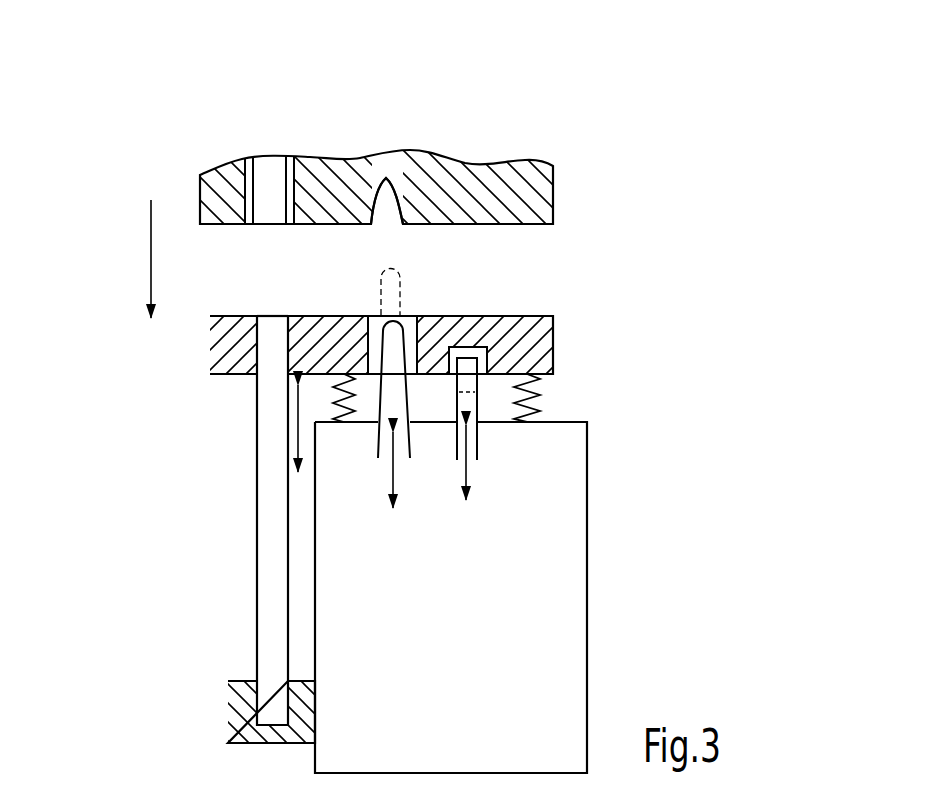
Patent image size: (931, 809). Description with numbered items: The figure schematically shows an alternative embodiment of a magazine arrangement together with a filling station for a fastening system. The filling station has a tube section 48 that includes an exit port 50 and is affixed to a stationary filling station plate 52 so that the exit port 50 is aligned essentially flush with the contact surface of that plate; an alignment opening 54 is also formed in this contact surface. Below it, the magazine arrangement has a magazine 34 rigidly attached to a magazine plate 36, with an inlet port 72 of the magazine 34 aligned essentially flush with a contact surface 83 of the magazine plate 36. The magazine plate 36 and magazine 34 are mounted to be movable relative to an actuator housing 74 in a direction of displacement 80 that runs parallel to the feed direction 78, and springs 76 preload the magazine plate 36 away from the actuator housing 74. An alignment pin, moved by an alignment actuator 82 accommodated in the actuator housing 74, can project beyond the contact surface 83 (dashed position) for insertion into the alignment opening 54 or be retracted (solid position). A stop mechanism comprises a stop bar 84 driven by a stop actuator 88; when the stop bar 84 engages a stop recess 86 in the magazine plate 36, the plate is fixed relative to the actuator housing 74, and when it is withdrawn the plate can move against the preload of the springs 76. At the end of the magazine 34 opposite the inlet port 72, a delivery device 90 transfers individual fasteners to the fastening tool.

The magazine 34 is at (257, 581).
The magazine plate 36 is at (542, 348).
The tube section 48 is at (253, 176).
The exit port 50 is at (273, 190).
The filling station plate 52 is at (547, 184).
The alignment opening 54 is at (384, 205).
The inlet port 72 is at (268, 320).
The actuator housing 74 is at (585, 562).
The springs 76 is at (540, 398).
The feed direction 78 is at (148, 240).
The direction of displacement 80 is at (298, 422).
The alignment actuator 82 is at (396, 470).
The contact surface 83 is at (438, 314).
The stop bar 84 is at (480, 393).
The stop recess 86 is at (468, 348).
The stop actuator 88 is at (468, 461).
The delivery device 90 is at (237, 728).